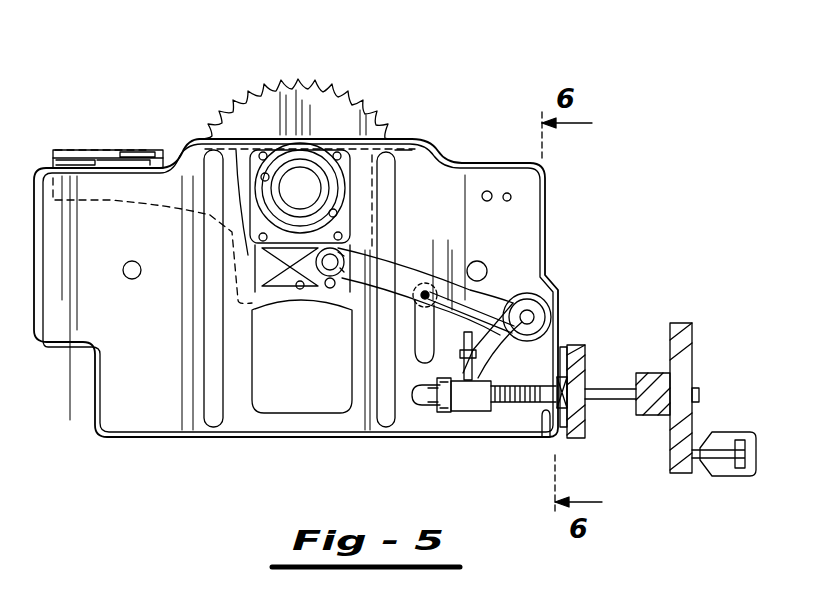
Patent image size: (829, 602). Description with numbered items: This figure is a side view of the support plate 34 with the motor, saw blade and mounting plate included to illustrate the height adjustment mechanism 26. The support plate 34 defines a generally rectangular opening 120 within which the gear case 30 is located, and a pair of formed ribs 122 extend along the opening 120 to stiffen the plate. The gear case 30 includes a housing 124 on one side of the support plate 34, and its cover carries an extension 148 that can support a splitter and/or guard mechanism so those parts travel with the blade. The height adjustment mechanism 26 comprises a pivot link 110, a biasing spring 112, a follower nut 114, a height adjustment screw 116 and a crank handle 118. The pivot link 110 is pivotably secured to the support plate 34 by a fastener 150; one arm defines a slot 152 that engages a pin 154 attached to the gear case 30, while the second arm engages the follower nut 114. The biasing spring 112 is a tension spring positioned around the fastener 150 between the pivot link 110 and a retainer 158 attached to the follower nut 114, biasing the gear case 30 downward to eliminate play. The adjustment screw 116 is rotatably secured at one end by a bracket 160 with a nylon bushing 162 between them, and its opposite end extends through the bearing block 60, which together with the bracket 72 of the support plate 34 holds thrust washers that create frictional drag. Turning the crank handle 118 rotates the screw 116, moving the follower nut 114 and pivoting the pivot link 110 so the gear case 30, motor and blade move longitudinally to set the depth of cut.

The height adjustment mechanism 26 is at (627, 271).
The gear case 30 is at (280, 295).
The support plate 34 is at (150, 356).
The bearing block 60 is at (583, 438).
The bracket 72 is at (543, 440).
The pivot link 110 is at (410, 270).
The biasing spring 112 is at (545, 298).
The follower nut 114 is at (473, 400).
The height adjustment screw 116 is at (623, 403).
The crank handle 118 is at (683, 473).
The opening 120 is at (253, 373).
The formed ribs 122 is at (385, 148).
The housing 124 is at (243, 160).
The extension 148 is at (95, 150).
The fastener 150 is at (560, 335).
The slot 152 is at (342, 252).
The pin 154 is at (415, 145).
The retainer 158 is at (550, 340).
The bracket 160 is at (440, 413).
The nylon bushing 162 is at (447, 415).